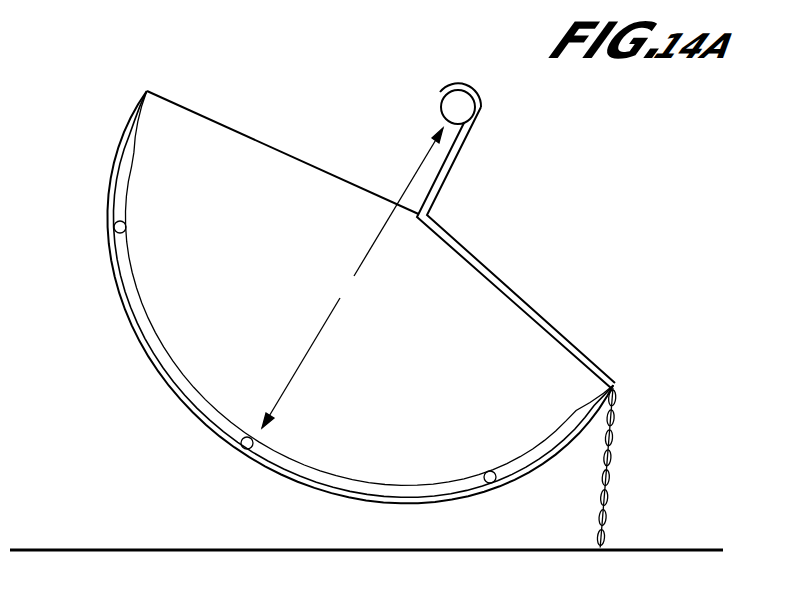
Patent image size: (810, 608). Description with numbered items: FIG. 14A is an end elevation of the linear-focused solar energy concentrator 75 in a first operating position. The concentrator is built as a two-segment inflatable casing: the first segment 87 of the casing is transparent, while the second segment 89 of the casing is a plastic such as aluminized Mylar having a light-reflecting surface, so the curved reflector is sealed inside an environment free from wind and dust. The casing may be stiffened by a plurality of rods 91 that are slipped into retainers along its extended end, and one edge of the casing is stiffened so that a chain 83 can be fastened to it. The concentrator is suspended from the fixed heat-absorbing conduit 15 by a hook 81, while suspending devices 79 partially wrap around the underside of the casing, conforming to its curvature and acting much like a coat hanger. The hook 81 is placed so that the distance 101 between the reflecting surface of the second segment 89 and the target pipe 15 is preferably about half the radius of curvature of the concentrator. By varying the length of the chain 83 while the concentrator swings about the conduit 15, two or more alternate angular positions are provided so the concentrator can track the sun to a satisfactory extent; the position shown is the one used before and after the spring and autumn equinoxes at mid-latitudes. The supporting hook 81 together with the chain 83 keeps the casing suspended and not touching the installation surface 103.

The heat-absorbing conduit 15 is at (441, 120).
The linear-focused solar energy concentrator 75 is at (545, 298).
The suspending devices 79 is at (480, 251).
The hook 81 is at (450, 88).
The chain 83 is at (603, 492).
The first segment of the casing 87 is at (213, 108).
The second segment of the casing 89 is at (300, 458).
The rods 91 is at (228, 443).
The distance 101 is at (353, 293).
The installation surface 103 is at (680, 549).